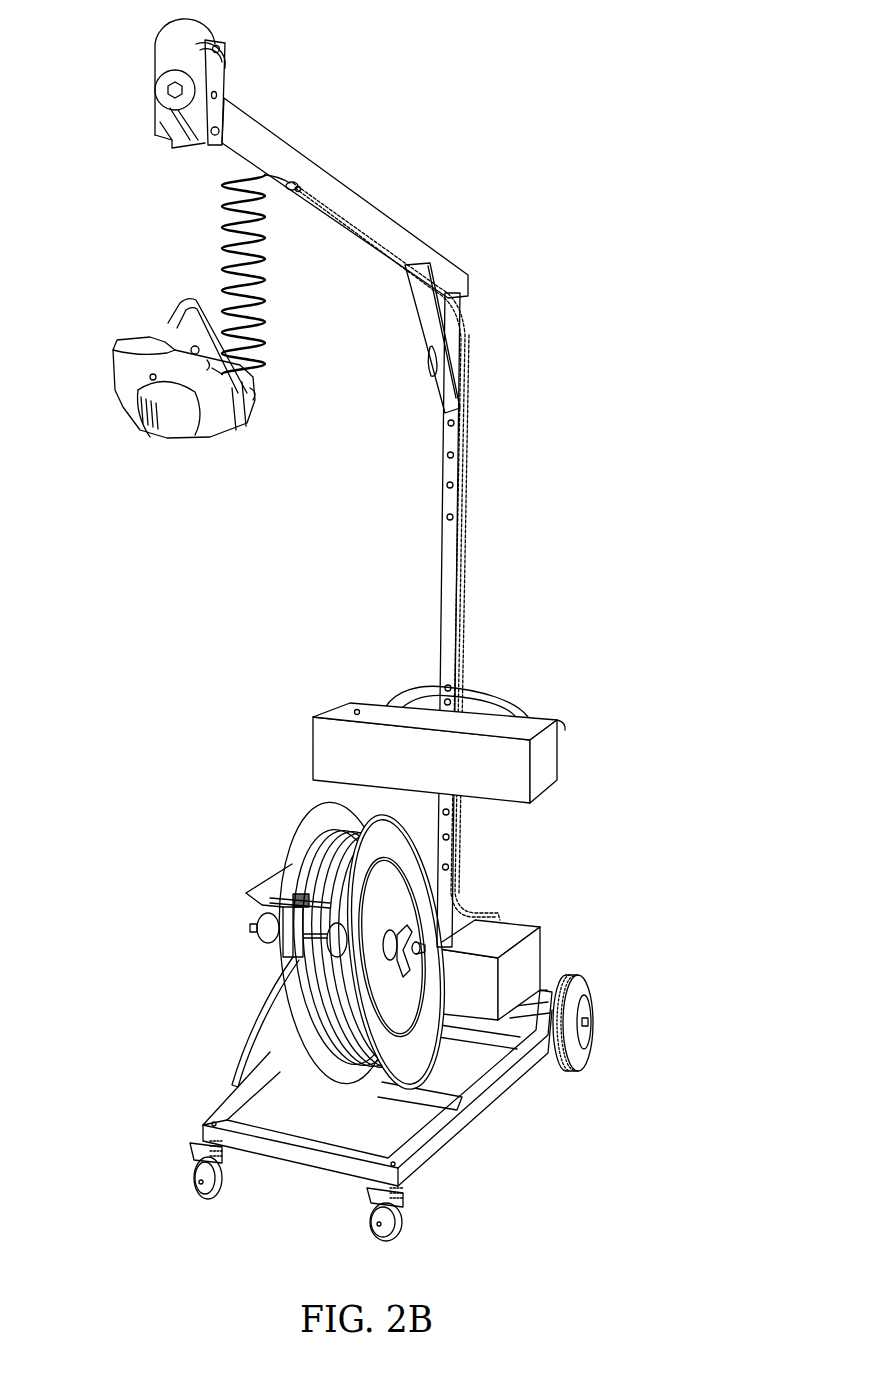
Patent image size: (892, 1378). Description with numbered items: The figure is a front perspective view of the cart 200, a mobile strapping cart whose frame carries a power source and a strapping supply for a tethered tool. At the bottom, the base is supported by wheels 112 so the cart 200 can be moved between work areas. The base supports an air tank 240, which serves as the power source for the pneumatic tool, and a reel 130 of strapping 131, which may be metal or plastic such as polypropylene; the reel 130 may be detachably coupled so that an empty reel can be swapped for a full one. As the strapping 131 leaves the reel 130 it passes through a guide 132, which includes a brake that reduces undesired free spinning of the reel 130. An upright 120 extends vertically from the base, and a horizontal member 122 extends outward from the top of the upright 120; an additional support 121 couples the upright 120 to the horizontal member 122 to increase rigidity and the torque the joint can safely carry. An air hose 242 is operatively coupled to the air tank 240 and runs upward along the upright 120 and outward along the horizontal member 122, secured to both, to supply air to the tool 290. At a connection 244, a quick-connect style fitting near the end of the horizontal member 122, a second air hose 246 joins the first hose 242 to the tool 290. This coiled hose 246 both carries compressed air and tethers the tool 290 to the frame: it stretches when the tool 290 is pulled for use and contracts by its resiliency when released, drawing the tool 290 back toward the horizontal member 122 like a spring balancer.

The cart 200 is at (606, 120).
The horizontal member 122 is at (338, 196).
The connection 244 is at (294, 193).
The second air hose 246 is at (220, 237).
The tool 290 is at (133, 415).
The support 121 is at (424, 322).
The air hose 242 is at (470, 373).
The upright 120 is at (446, 552).
The reel 130 is at (312, 840).
The guide 132 is at (258, 925).
The strapping 131 is at (254, 1018).
The air tank 240 is at (538, 940).
The wheels 112 is at (220, 1182).